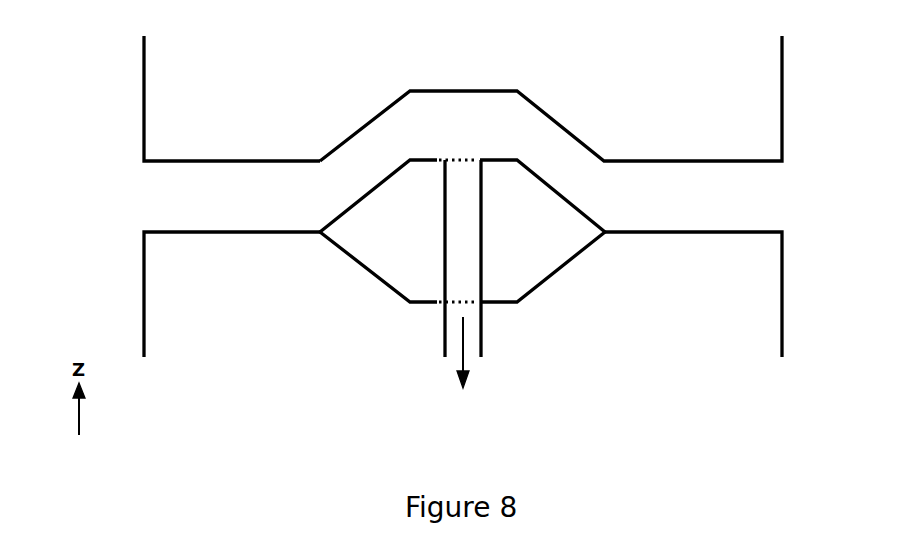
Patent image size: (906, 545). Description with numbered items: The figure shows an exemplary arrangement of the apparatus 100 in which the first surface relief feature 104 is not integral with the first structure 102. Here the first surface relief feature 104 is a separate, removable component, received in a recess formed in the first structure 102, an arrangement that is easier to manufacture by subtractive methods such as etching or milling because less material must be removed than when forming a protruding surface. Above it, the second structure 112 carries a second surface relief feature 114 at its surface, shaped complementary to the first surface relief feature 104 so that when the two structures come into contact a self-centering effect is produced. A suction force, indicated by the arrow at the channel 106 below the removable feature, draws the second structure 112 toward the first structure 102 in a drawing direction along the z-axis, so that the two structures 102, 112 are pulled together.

The apparatus 100 is at (125, 97).
The first structure 102 is at (143, 245).
The first surface relief feature 104 is at (587, 213).
The suction channel 106 is at (445, 337).
The second structure 112 is at (143, 116).
The second surface relief feature 114 is at (585, 140).